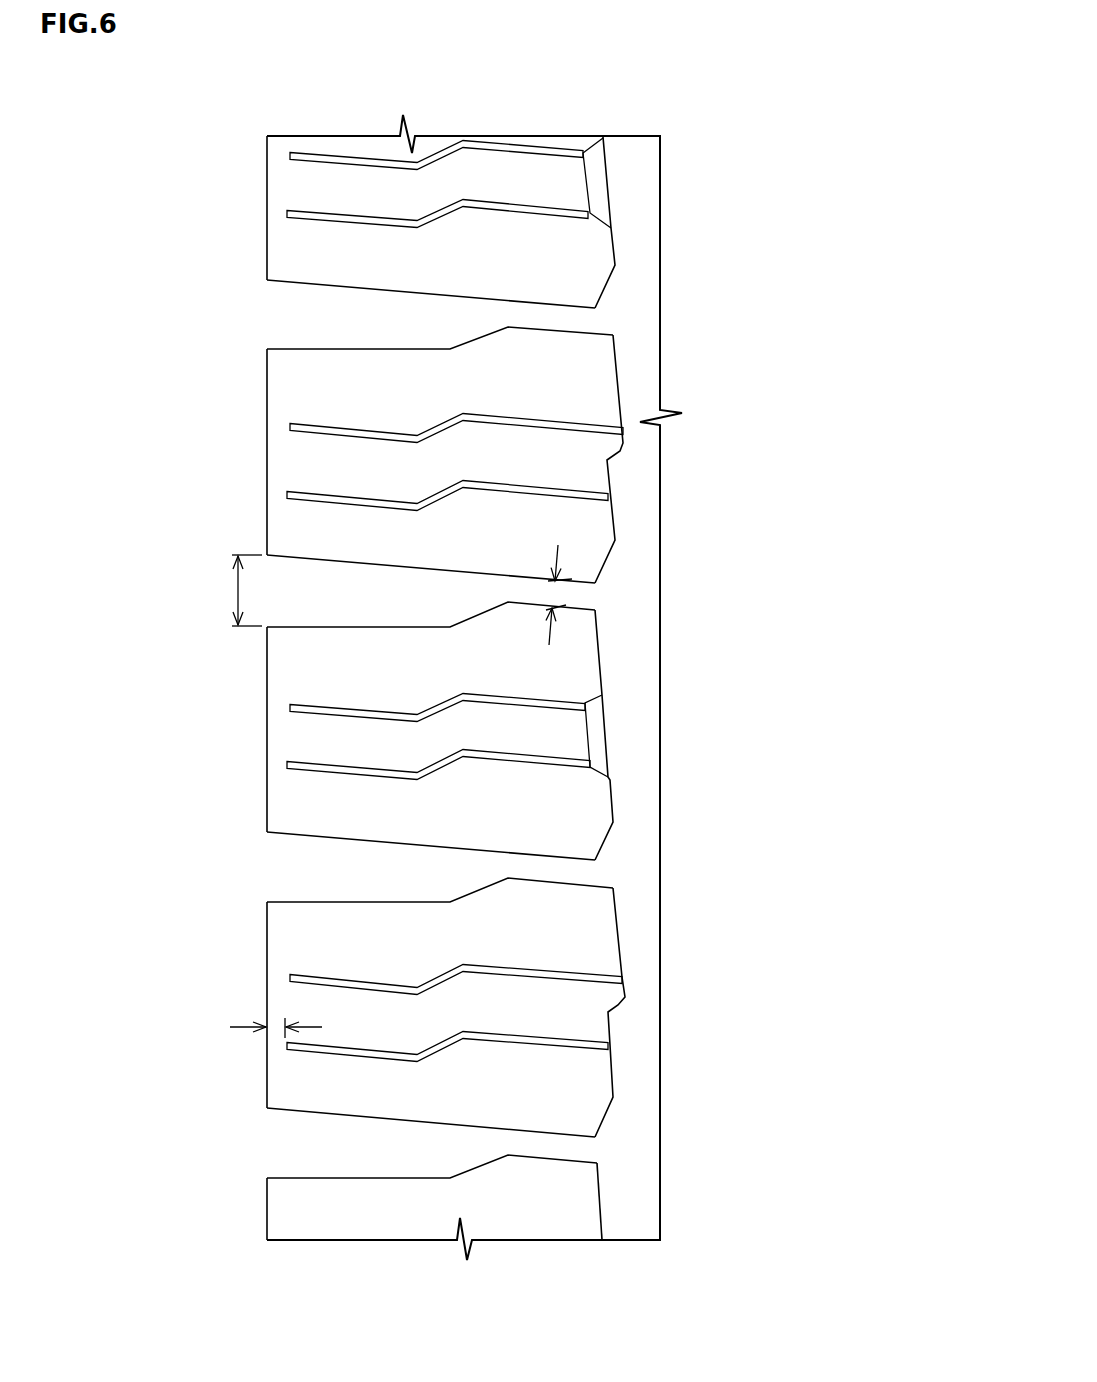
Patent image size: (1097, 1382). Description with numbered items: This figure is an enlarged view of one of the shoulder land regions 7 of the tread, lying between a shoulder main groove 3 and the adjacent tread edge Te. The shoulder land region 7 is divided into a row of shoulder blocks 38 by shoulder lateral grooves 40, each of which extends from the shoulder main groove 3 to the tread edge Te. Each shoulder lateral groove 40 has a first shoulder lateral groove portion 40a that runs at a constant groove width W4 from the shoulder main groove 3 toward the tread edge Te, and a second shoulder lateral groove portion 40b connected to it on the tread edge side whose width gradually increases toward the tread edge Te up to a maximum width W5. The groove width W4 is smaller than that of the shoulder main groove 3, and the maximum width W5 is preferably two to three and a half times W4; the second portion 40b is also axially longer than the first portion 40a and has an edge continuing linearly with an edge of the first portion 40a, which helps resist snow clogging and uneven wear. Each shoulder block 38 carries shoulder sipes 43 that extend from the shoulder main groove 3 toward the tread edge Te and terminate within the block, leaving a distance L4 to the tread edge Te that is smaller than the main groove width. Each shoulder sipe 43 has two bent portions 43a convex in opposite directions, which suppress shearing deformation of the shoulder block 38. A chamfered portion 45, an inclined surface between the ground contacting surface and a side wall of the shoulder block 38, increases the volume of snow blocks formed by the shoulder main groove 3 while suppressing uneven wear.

The shoulder main groove 3 is at (629, 150).
The tread edge Te is at (267, 179).
The shoulder land region 7 is at (444, 183).
The shoulder lateral groove 40 is at (508, 709).
The first shoulder lateral groove portion 40a is at (556, 320).
The second shoulder lateral groove portion 40b is at (400, 320).
The shoulder block 38 is at (465, 601).
The shoulder sipe 43 is at (437, 708).
The bent portion 43a is at (415, 985).
The chamfered portion 45 is at (597, 182).
The groove width of first shoulder lateral groove portion W4 is at (566, 581).
The maximum width of second shoulder lateral groove portion W5 is at (223, 590).
The distance between sipe end and tread edge L4 is at (277, 1026).